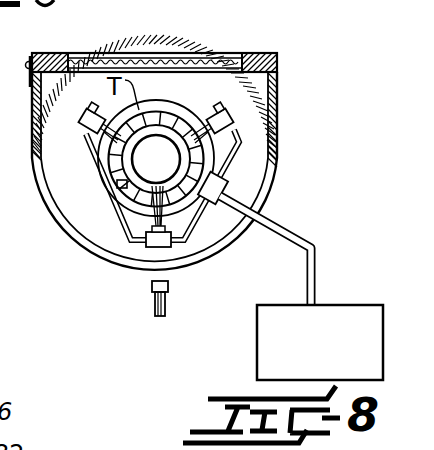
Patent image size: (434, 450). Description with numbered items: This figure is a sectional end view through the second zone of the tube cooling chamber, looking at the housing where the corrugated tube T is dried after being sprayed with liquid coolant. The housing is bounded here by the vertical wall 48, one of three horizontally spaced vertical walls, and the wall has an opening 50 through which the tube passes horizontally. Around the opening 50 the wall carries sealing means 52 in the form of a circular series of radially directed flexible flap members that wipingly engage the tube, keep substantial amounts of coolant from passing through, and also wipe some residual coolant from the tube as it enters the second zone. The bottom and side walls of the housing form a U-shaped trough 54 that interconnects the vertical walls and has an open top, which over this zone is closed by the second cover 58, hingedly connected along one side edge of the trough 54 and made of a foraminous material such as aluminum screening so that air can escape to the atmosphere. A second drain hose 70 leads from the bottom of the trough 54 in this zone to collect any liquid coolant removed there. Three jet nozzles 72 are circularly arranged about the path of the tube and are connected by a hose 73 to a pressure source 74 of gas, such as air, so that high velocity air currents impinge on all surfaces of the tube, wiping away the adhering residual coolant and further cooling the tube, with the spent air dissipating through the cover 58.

The vertical wall 48 is at (258, 102).
The opening 50 is at (119, 187).
The sealing means 52 is at (176, 126).
The U-shaped trough 54 is at (107, 277).
The second cover 58 is at (191, 62).
The second drain hose 70 is at (167, 306).
The jet nozzles 72 is at (92, 106).
The hose 73 is at (293, 228).
The pressure source 74 is at (370, 312).